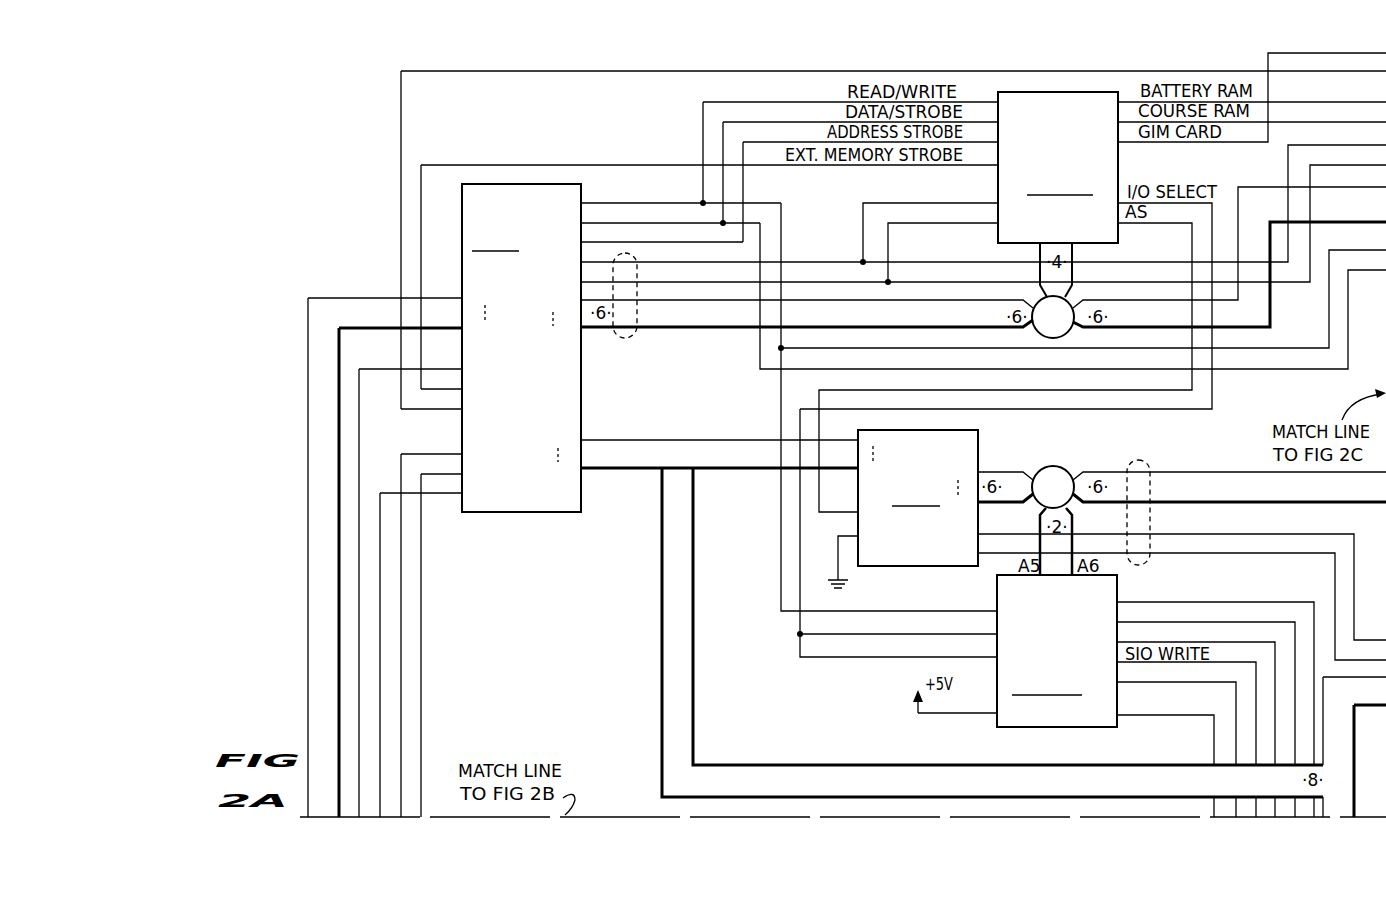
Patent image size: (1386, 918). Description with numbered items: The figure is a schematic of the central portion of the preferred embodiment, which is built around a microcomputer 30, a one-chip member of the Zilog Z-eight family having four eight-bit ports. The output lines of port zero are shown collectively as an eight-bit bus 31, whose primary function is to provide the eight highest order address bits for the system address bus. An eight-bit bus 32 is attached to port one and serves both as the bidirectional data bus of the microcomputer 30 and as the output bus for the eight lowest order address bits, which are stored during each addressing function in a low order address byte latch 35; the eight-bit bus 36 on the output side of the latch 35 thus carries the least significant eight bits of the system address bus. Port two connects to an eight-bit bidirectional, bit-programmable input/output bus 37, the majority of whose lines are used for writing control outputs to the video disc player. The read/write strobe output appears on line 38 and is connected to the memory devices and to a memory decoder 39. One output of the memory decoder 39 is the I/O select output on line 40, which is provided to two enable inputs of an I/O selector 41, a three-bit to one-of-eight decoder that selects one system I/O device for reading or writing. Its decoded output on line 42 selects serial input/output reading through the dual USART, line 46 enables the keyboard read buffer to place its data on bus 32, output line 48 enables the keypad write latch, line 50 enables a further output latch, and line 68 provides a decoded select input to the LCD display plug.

The microcomputer 30 is at (522, 512).
The 8 bit bus 31 is at (633, 336).
The 8 bit bus 32 is at (628, 440).
The low order address byte latch 35 is at (980, 445).
The 8 bit bus 36 is at (1142, 461).
The input/output bus 37 is at (366, 296).
The read/write strobe line 38 is at (651, 202).
The memory decoder 39 is at (995, 233).
The I/O select line 40 is at (1212, 213).
The I/O selector 41 is at (1048, 727).
The decoded output line 42 is at (1190, 717).
The keyboard read enable line 46 is at (1236, 727).
The keypad write enable line 48 is at (1271, 598).
The latch enable line 50 is at (1279, 657).
The decoded select line 68 is at (1314, 622).